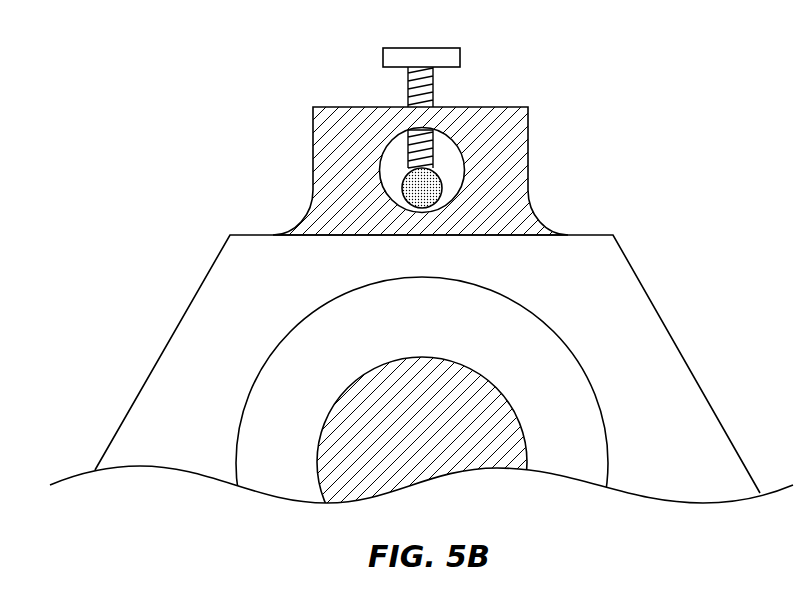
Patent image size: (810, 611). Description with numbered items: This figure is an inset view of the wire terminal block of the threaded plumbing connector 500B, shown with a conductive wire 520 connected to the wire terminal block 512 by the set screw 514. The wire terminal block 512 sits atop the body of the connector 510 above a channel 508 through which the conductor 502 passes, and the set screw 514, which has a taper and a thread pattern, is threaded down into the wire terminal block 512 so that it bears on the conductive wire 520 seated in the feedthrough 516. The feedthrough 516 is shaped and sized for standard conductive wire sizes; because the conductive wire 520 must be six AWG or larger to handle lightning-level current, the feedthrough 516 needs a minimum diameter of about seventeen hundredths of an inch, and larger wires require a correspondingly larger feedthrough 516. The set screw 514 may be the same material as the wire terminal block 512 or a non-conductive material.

The threaded plumbing connector 500B is at (143, 538).
The catheter / tube 502 is at (417, 356).
The channel 508 is at (602, 408).
The body 510 is at (677, 345).
The wire terminal block 512 is at (353, 122).
The set screw 514 is at (460, 58).
The feedthrough 516 is at (393, 165).
The conductive wire 520 is at (442, 188).